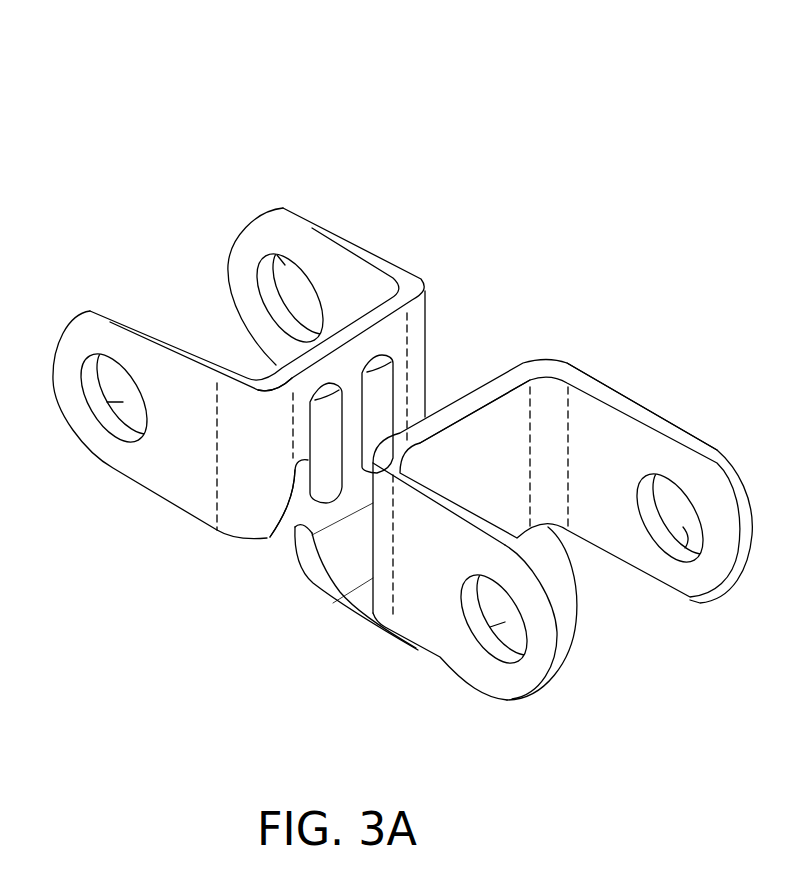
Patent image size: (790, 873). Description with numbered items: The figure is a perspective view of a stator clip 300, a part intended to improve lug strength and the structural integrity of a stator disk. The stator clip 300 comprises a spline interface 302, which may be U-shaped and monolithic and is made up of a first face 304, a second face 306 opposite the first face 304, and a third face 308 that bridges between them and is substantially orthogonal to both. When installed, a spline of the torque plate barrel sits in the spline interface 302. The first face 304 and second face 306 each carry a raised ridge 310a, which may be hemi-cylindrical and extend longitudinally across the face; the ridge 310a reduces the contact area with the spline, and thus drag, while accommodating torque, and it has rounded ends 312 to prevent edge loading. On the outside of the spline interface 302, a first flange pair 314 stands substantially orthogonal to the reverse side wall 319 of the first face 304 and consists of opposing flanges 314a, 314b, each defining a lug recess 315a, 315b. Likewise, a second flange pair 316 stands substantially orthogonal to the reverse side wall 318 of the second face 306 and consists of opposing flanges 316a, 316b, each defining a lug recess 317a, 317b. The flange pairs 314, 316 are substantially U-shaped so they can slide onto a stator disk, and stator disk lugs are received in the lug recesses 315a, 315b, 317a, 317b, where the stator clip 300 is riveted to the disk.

The stator clip 300 is at (600, 150).
The spline interface 302 is at (460, 367).
The first face 304 is at (400, 333).
The second face 306 is at (332, 607).
The third face 308 is at (313, 578).
The ridge 310a is at (300, 522).
The rounded ends 312 is at (400, 360).
The first flange pair 314 is at (180, 197).
The flange 314a is at (113, 322).
The flange 314b is at (320, 228).
The lug recess 315a is at (108, 402).
The lug recess 315b is at (285, 267).
The second flange pair 316 is at (737, 625).
The flange 316a is at (510, 700).
The flange 316b is at (713, 447).
The lug recess 317a is at (474, 627).
The lug recess 317b is at (667, 587).
The reverse side wall 318 is at (505, 450).
The reverse side wall 319 is at (290, 356).